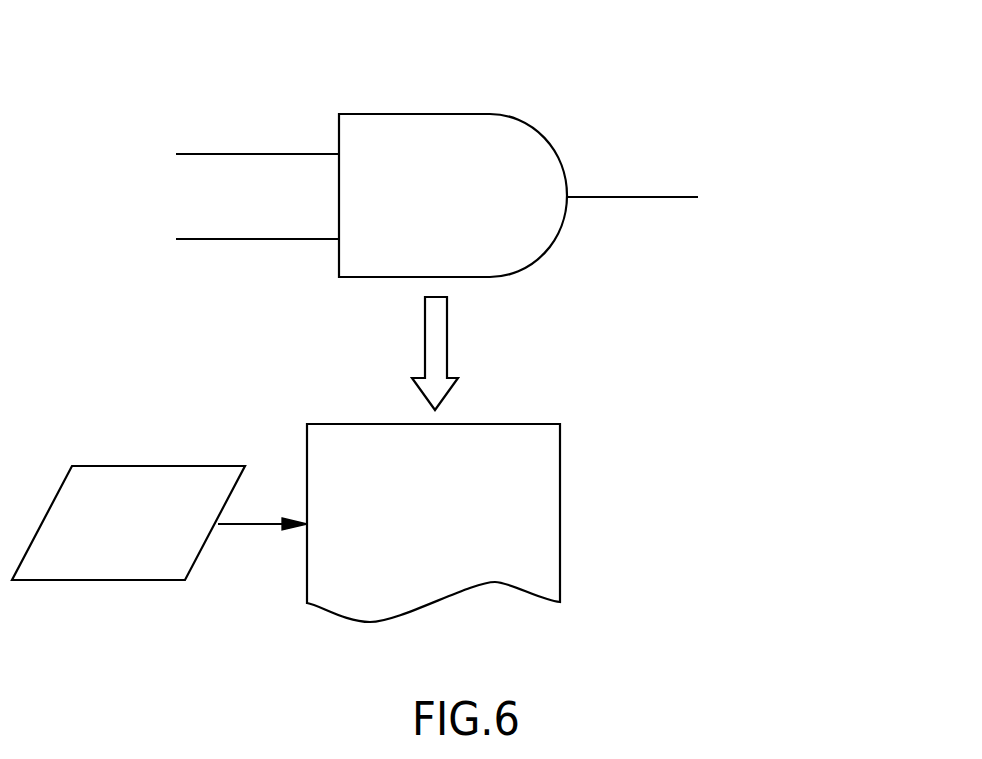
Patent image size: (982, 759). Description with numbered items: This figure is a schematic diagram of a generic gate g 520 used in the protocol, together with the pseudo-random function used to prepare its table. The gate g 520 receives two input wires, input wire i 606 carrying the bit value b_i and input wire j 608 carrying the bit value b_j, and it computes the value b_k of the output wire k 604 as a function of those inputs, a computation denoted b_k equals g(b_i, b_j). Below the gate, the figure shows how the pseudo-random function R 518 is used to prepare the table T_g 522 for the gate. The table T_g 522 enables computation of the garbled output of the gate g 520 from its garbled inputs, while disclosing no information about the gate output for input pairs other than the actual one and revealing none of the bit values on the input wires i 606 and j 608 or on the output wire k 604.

The gate g 520 is at (480, 114).
The input wire i 606 is at (302, 153).
The input wire j 608 is at (282, 240).
The output wire k 604 is at (642, 197).
The table T_g 522 is at (561, 527).
The pseudo-random function R 518 is at (123, 582).